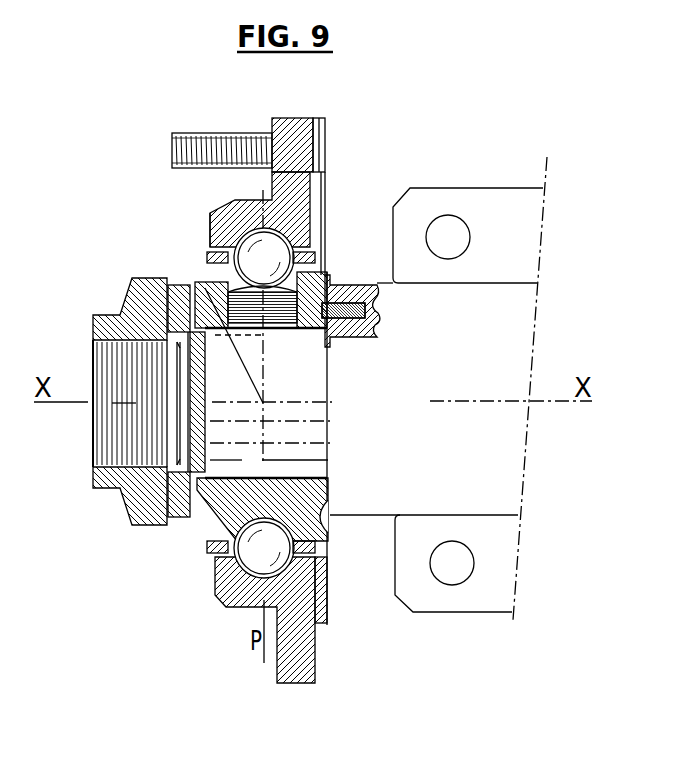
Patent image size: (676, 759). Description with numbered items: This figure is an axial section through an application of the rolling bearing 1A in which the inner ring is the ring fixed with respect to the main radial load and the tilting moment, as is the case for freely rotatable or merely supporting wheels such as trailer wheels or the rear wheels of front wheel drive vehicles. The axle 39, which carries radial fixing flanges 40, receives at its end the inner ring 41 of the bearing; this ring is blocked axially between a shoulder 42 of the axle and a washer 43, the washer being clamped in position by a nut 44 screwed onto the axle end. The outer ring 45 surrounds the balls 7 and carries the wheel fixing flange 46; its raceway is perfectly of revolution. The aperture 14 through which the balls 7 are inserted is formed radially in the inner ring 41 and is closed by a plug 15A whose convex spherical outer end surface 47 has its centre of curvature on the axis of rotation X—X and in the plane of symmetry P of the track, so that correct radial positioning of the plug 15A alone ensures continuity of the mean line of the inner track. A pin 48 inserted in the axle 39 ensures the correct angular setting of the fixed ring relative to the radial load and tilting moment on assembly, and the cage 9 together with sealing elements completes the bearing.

The wheel fixing flange 46 is at (297, 118).
The rolling bearing 1A is at (200, 216).
The outer ring 45 is at (210, 228).
The aperture 14 is at (205, 288).
The pin 48 is at (348, 290).
The radial fixing flanges 40 is at (464, 188).
The axle 39 is at (518, 342).
The convex spherical outer end surface 47 is at (268, 300).
The inner ring 41 is at (307, 318).
The plug 15A is at (278, 322).
The balls 7 is at (262, 482).
The shoulder 42 is at (325, 535).
The cage 9 is at (212, 546).
The washer 43 is at (177, 519).
The nut 44 is at (126, 509).